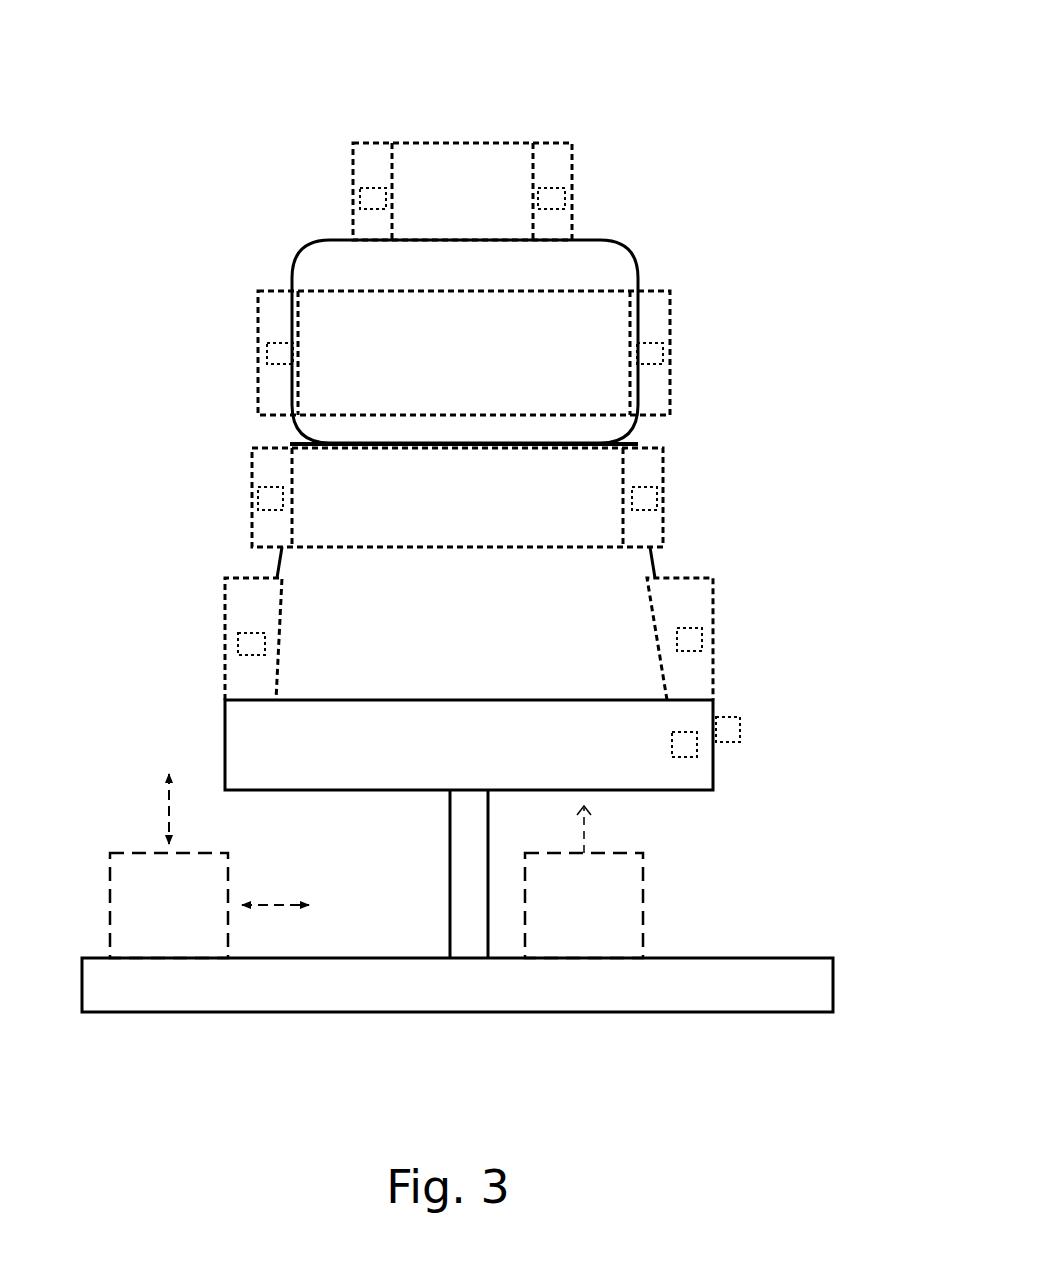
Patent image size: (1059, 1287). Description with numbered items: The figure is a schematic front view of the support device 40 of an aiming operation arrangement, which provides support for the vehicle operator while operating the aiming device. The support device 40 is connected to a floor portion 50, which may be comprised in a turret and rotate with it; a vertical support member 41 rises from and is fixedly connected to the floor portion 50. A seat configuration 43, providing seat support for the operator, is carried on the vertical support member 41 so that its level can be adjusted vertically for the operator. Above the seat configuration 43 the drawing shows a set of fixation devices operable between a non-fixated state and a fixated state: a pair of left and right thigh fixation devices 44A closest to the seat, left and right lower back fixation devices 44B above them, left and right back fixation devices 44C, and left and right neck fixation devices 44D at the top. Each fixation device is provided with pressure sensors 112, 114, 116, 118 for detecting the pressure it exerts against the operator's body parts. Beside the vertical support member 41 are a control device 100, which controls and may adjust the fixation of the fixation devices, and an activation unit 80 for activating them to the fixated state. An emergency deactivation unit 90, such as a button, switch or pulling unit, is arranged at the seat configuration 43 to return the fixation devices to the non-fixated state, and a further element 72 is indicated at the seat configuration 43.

The support device 40 is at (685, 91).
The vertical support member 41 is at (449, 893).
The seat configuration 43 is at (682, 794).
The thigh fixation device 44A is at (234, 572).
The lower back fixation device 44B is at (255, 446).
The back fixation device 44C is at (263, 286).
The neck fixation device 44D is at (458, 136).
The floor portion 50 is at (709, 955).
The sensor on base platform 72 is at (700, 750).
The activation unit 80 is at (570, 917).
The emergency deactivation unit 90 is at (742, 730).
The control device 100 is at (149, 917).
The pressure sensor 112 is at (237, 645).
The pressure sensor 114 is at (252, 499).
The pressure sensor 116 is at (262, 354).
The pressure sensor 118 is at (355, 199).